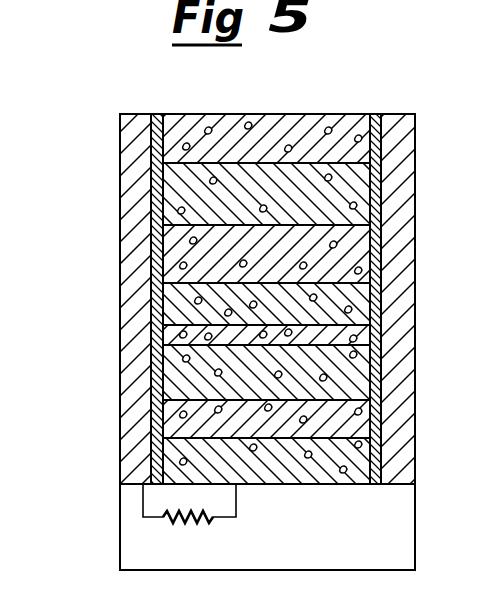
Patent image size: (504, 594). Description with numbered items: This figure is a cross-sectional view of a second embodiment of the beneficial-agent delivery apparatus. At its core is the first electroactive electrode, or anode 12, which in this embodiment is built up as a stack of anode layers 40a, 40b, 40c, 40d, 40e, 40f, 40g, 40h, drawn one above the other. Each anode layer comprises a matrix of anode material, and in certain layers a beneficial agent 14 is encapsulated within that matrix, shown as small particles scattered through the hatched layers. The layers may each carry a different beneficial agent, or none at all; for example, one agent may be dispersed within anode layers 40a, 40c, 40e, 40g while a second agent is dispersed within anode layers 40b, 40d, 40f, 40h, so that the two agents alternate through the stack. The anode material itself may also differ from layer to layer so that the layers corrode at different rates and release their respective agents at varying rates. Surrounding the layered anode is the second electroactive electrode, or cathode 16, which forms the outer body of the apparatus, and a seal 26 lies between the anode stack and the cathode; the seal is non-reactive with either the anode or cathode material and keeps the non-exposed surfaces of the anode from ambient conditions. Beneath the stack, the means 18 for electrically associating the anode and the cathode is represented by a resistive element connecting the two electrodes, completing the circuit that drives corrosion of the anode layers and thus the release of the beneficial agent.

The first electroactive electrode 12 is at (240, 112).
The beneficial agent 14 is at (323, 135).
The second electroactive electrode 16 is at (417, 150).
The means for electrically associating the anode and the cathode 18 is at (158, 531).
The seal 26 is at (382, 331).
The anode layer 40a is at (167, 140).
The anode layer 40b is at (167, 194).
The anode layer 40c is at (167, 257).
The anode layer 40d is at (167, 301).
The anode layer 40e is at (167, 335).
The anode layer 40f is at (167, 378).
The anode layer 40g is at (167, 418).
The anode layer 40h is at (167, 461).